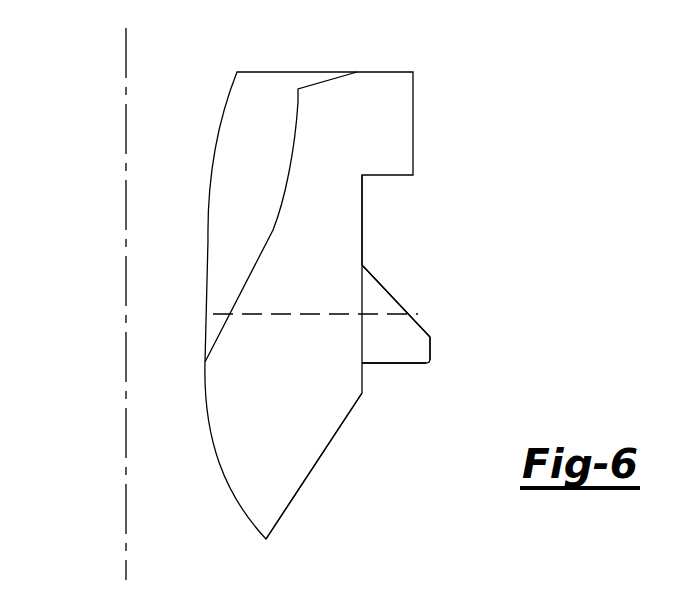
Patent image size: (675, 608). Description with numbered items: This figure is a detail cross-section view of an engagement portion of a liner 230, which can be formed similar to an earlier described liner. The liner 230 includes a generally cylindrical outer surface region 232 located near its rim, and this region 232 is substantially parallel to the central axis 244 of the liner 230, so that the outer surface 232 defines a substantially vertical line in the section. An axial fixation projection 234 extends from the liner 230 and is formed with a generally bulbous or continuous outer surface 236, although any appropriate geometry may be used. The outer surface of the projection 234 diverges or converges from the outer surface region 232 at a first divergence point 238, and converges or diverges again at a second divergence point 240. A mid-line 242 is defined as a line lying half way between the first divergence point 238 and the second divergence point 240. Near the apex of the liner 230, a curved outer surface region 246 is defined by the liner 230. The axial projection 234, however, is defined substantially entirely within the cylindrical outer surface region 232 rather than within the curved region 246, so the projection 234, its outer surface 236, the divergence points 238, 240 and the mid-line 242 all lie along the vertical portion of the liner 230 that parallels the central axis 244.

The liner 230 is at (288, 108).
The cylindrical outer surface region 232 is at (363, 209).
The axial fixation projection 234 is at (438, 290).
The outer surface 236 is at (431, 347).
The first divergence point 238 is at (363, 370).
The second divergence point 240 is at (363, 265).
The mid-line 242 is at (320, 312).
The central axis 244 is at (126, 53).
The curved outer surface region 246 is at (300, 498).